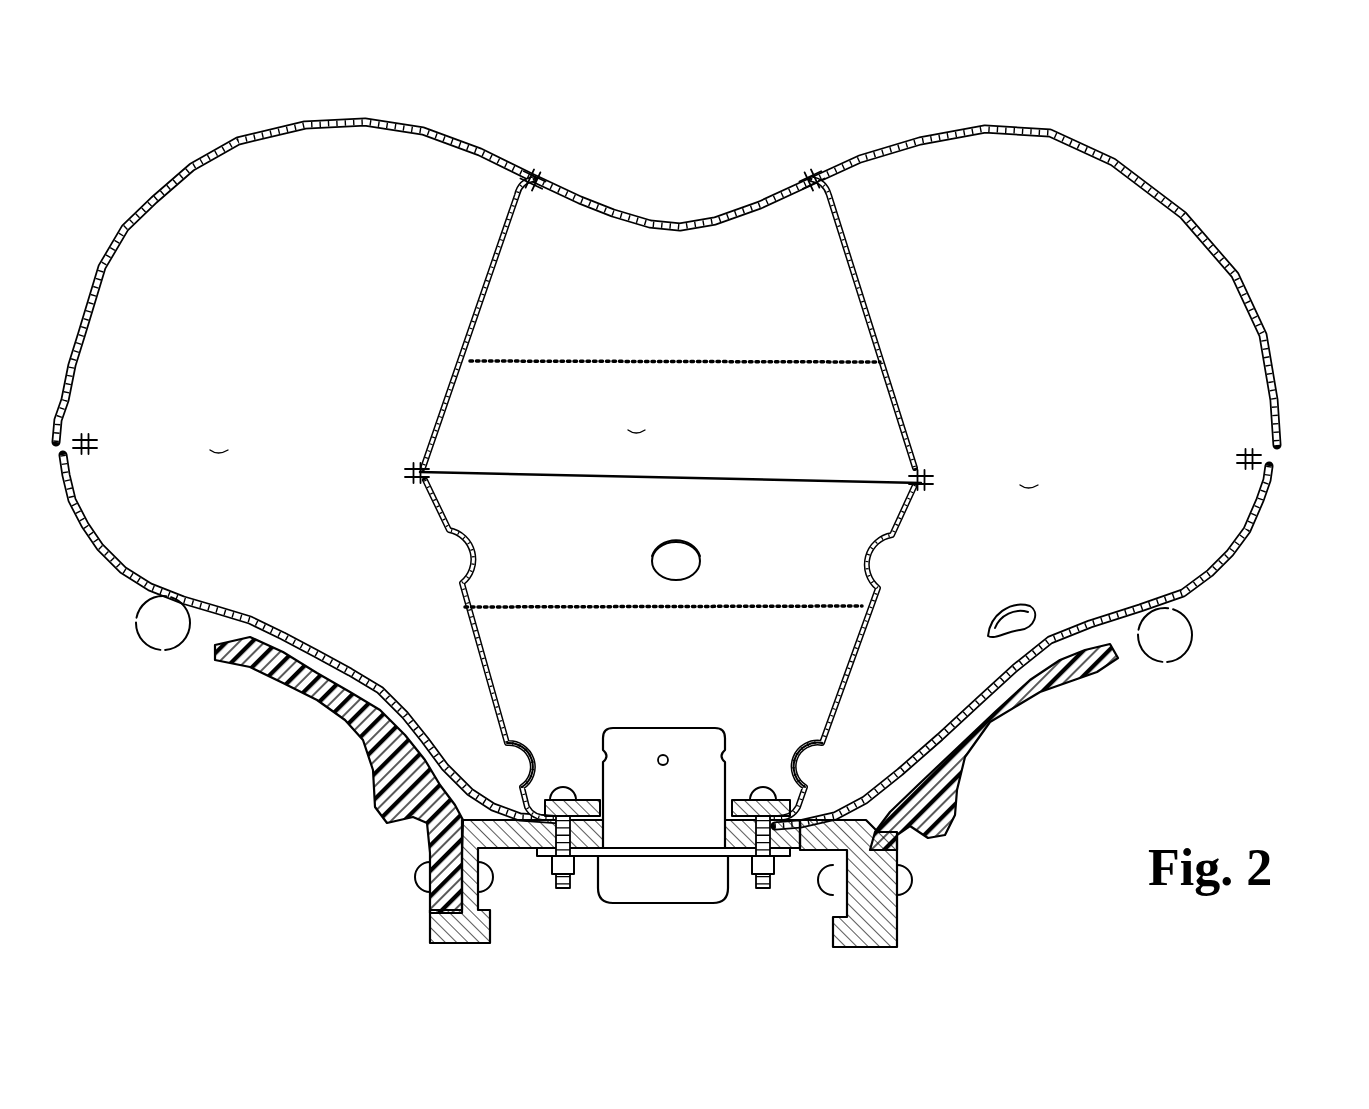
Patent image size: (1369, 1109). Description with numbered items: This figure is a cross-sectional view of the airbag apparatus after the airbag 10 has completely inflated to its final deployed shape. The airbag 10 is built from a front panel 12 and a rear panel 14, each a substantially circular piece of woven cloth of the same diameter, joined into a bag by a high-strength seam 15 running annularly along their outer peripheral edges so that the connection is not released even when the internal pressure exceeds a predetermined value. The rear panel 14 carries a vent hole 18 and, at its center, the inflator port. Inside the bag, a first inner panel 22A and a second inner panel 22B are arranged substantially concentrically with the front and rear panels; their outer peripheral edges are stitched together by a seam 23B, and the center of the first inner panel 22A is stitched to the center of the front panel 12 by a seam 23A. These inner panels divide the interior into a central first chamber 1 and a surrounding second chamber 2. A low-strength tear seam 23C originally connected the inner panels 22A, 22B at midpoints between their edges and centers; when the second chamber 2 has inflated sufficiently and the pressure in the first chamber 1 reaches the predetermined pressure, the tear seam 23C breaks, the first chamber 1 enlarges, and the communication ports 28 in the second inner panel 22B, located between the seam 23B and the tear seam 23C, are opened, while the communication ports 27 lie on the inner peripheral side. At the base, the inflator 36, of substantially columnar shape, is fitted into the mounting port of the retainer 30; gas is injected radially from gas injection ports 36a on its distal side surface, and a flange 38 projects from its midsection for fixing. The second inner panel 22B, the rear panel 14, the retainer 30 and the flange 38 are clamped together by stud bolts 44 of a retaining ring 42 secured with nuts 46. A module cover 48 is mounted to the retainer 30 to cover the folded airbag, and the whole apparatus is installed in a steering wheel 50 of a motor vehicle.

The first chamber 1 is at (637, 417).
The second chamber 2 is at (624, 455).
The airbag 10 is at (1176, 193).
The front panel 12 is at (1246, 290).
The rear panel 14 is at (1240, 558).
The seam 15 is at (88, 454).
The vent hole 18 is at (1027, 612).
The first inner panel 22A is at (495, 300).
The second inner panel 22B is at (448, 507).
The seam 23A is at (808, 174).
The seam 23B is at (413, 482).
The tear seam 23C is at (862, 608).
The communication port 27 is at (808, 752).
The communication port 28 is at (878, 560).
The retainer 30 is at (880, 845).
The inflator 36 is at (640, 833).
The gas injection ports 36a is at (597, 737).
The flange 38 is at (610, 858).
The retaining ring 42 is at (750, 796).
The stud bolts 44 is at (762, 890).
The nuts 46 is at (778, 872).
The module cover 48 is at (1020, 690).
The steering wheel 50 is at (1173, 660).